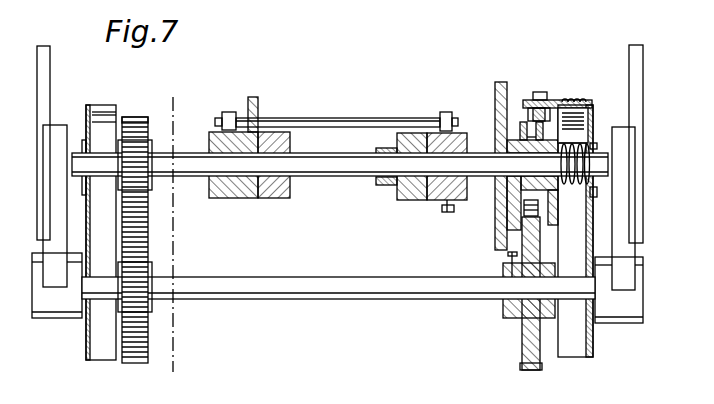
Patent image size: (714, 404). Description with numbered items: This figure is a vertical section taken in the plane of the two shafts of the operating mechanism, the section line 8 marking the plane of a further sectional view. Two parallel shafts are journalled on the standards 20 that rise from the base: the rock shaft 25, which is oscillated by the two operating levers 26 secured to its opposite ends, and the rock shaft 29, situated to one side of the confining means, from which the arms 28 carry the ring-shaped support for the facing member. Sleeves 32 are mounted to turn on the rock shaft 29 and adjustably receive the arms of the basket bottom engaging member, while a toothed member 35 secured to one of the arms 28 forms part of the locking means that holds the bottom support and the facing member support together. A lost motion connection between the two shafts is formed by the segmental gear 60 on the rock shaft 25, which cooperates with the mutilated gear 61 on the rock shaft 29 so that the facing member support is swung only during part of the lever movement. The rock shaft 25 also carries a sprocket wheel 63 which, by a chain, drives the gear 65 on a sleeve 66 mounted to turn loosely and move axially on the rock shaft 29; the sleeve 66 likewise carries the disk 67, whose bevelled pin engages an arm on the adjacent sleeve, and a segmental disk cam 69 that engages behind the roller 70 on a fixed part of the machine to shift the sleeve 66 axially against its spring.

The section line 8- 8 is at (173, 94).
The standards 20 is at (97, 340).
The rock shaft 25 is at (365, 294).
The operating levers 26 is at (50, 199).
The arms 28 is at (235, 198).
The rock shaft 29 is at (358, 178).
The sleeves 32 is at (276, 200).
The toothed member 35 is at (252, 97).
The segmental gear 60 is at (135, 353).
The mutilated gear 61 is at (137, 117).
The sprocket wheel 63 is at (530, 341).
The gear 65 is at (522, 128).
The sleeve 66 is at (516, 182).
The disk 67 is at (496, 92).
The segmental disk cam 69 is at (566, 100).
The roller 70 is at (541, 99).